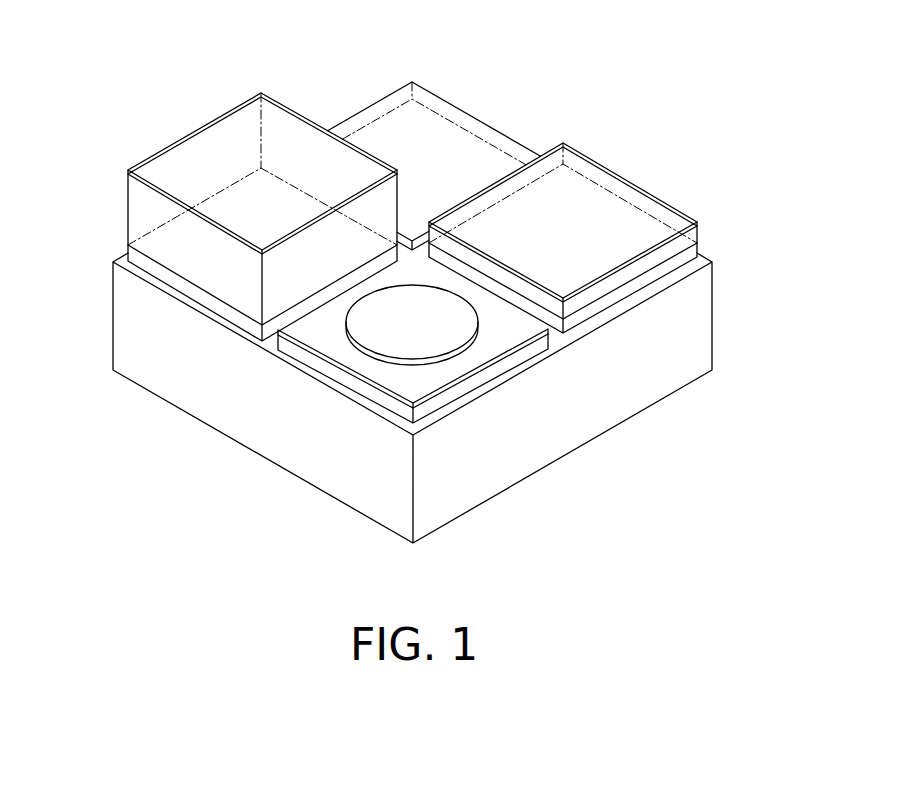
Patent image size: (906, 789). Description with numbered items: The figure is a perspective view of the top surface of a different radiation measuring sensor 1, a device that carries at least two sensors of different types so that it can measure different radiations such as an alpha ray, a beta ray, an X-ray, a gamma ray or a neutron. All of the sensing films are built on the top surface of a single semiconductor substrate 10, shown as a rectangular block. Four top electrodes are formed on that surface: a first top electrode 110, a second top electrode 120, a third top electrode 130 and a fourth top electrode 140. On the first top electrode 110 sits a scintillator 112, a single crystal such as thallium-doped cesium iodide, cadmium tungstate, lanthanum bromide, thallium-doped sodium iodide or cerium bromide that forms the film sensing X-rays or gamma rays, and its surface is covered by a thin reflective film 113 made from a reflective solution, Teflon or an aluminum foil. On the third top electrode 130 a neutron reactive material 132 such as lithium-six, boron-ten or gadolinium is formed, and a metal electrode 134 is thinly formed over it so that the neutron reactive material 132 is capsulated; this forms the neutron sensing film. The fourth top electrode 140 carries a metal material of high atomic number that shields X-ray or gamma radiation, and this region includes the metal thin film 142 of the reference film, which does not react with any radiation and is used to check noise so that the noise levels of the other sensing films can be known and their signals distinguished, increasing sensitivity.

The different radiation measuring sensor 1 is at (681, 29).
The semiconductor substrate 10 is at (693, 325).
The first top electrode 110 is at (162, 272).
The scintillator 112 is at (216, 207).
The thin reflective film 113 is at (203, 125).
The second top electrode 120 is at (450, 135).
The third top electrode 130 is at (297, 350).
The neutron reactive material 132 is at (393, 398).
The metal electrode 134 is at (383, 335).
The fourth top electrode 140 is at (712, 257).
The metal thin film 142 is at (618, 192).